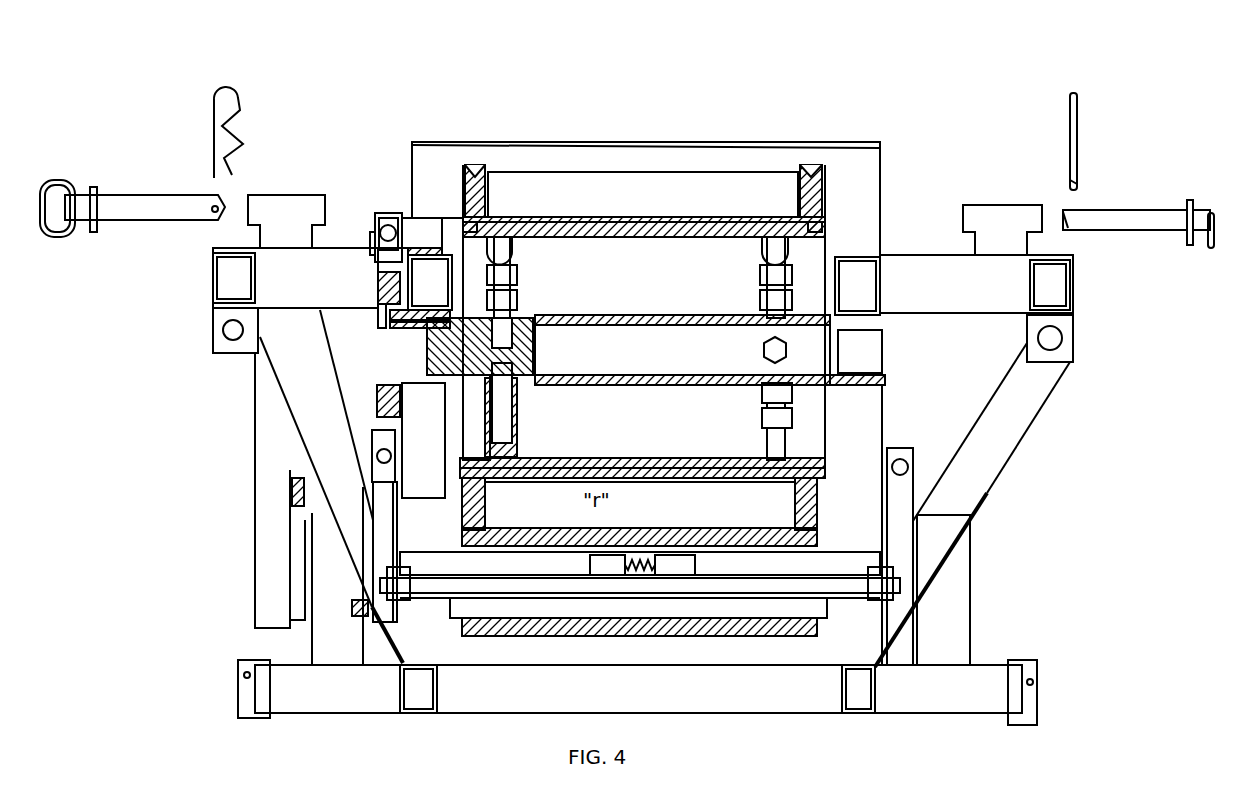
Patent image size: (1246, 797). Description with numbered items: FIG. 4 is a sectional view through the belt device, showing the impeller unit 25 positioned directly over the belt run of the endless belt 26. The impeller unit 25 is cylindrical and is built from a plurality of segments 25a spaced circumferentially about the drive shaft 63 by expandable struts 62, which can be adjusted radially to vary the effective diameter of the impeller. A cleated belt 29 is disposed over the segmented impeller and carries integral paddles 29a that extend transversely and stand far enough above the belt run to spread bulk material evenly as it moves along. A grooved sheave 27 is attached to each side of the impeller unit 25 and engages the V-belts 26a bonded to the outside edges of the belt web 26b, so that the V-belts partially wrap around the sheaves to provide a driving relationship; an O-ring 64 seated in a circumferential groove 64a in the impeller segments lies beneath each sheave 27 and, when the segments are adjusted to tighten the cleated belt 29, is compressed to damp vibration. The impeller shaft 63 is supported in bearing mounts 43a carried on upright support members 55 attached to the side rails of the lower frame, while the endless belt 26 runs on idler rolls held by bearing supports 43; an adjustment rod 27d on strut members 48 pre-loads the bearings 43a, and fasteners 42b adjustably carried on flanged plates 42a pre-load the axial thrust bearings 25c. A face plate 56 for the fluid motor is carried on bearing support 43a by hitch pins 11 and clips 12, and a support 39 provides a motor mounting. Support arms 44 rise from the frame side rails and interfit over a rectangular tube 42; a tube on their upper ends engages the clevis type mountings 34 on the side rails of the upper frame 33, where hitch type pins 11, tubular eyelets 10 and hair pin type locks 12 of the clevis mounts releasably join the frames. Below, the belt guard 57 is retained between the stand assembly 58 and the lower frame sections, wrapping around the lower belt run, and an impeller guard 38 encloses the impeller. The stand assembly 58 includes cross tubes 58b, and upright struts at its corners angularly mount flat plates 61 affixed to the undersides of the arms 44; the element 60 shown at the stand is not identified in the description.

The tubular eyelet 10 is at (272, 195).
The hitch type pin 11 is at (150, 195).
The hair pin type lock 12 is at (226, 90).
The impeller unit 25 is at (882, 345).
The impeller segment 25a is at (690, 238).
The axial thrust bearing 25c is at (450, 303).
The endless belt 26 is at (818, 628).
The V-belt 26a is at (485, 526).
The belt web 26b is at (625, 528).
The grooved sheave 27 is at (468, 170).
The adjustment rod 27d is at (750, 578).
The cleated belt 29 is at (576, 212).
The paddle 29a is at (687, 172).
The upper frame 33 is at (1076, 294).
The clevis type mounting 34 is at (213, 322).
The impeller guard 38 is at (505, 142).
The support 39 is at (364, 236).
The rectangular tube 42 is at (640, 596).
The flanged plate 42a is at (575, 612).
The fastener 42b is at (590, 568).
The bearing support 43 is at (886, 380).
The bearing support 43a is at (420, 396).
The support arm 44 is at (252, 398).
The strut member 48 is at (372, 468).
The upright support member 55 is at (423, 440).
The face plate 56 is at (379, 404).
The belt guard 57 is at (395, 660).
The stand assembly 58 is at (877, 690).
The cross tube 58b is at (758, 715).
The end cap 60 is at (248, 662).
The flat plate 61 is at (330, 553).
The expandable strut 62 is at (517, 266).
The drive shaft 63 is at (680, 385).
The O-ring 64 is at (465, 227).
The circumferential groove 64a is at (500, 237).